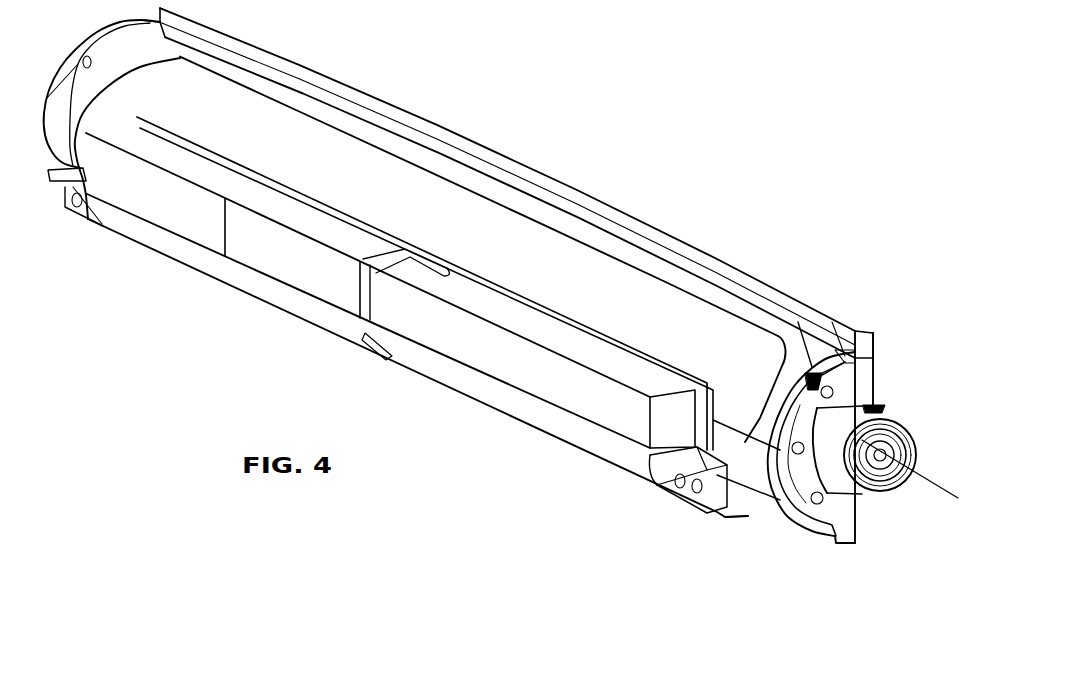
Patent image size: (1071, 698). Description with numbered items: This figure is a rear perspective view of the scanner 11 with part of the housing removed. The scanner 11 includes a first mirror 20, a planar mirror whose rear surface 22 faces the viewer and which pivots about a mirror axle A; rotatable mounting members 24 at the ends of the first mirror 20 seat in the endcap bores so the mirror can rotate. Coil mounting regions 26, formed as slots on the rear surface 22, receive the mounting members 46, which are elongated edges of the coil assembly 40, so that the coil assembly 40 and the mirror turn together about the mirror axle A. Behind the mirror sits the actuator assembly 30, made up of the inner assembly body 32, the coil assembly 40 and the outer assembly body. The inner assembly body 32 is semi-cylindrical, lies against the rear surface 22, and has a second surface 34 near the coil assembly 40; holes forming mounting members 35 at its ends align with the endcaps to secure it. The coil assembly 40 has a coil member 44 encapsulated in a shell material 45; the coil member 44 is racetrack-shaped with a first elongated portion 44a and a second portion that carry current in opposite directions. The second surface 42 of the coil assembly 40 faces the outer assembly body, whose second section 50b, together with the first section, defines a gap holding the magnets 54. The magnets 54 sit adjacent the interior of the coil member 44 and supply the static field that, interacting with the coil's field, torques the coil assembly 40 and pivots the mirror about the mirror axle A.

The scanner 11 is at (881, 539).
The first mirror 20 is at (877, 390).
The rear surface 22 is at (833, 338).
The rotatable mounting members 24 is at (908, 432).
The coil mounting regions 26 is at (862, 353).
The actuator assembly 30 is at (463, 431).
The inner assembly body 32 is at (799, 502).
The second surface 34 is at (816, 376).
The mounting members 35 is at (867, 378).
The coil assembly 40 is at (694, 288).
The second surface 42 is at (347, 132).
The coil member 44 is at (458, 222).
The first elongated portion 44a is at (243, 121).
The shell material 45 is at (594, 240).
The mounting members 46 is at (853, 349).
The second section 50b is at (626, 457).
The magnets 54 is at (160, 205).
The mirror axle A is at (912, 475).